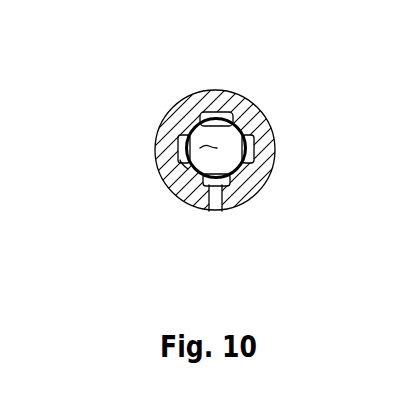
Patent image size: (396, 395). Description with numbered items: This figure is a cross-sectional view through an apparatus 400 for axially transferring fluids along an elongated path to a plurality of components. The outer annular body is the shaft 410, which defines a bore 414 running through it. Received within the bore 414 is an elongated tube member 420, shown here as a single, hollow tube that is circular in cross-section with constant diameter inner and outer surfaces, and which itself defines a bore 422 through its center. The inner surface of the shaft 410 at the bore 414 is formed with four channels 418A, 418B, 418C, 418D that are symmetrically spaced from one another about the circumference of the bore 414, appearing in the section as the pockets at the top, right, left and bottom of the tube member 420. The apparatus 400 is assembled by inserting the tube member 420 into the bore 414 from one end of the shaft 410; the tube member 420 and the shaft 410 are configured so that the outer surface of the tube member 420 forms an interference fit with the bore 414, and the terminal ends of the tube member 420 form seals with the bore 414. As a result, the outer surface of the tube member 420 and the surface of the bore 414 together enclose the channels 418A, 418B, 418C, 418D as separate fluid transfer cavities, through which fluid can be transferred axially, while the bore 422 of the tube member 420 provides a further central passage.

The apparatus 400 is at (213, 172).
The shaft 410 is at (213, 152).
The bore 414 is at (206, 144).
The bore 422 is at (176, 90).
The channel 418A is at (253, 148).
The channel 418B is at (228, 113).
The channel 418C is at (182, 152).
The channel 418D is at (218, 211).
The tube member 420 is at (185, 164).